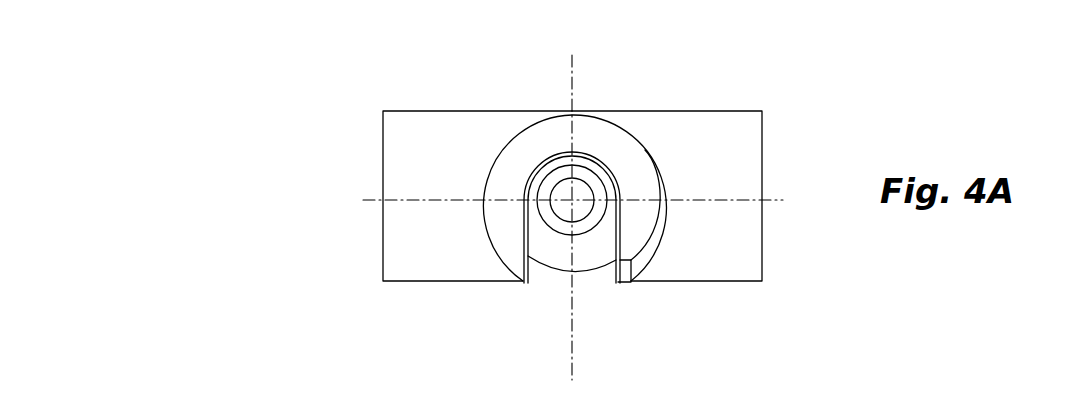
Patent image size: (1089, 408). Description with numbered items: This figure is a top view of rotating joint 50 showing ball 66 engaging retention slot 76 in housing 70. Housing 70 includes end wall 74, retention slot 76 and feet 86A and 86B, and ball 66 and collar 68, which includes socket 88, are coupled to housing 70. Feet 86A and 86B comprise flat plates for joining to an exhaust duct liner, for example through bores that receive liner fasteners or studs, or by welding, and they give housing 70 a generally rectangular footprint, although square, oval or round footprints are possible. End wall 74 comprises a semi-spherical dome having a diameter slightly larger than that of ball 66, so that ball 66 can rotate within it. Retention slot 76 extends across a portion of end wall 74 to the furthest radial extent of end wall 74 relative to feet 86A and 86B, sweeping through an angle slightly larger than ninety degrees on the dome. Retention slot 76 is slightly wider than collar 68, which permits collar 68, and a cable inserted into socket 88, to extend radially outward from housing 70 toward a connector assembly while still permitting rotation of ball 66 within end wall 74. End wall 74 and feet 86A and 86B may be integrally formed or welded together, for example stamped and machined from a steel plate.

The rotating joint 50 is at (332, 120).
The housing 70 is at (450, 138).
The end wall 74 is at (620, 152).
The socket 88 is at (561, 171).
The collar 68 is at (582, 227).
The ball 66 is at (560, 272).
The retention slot 76 is at (533, 272).
The foot 86A is at (748, 265).
The foot 86B is at (397, 253).